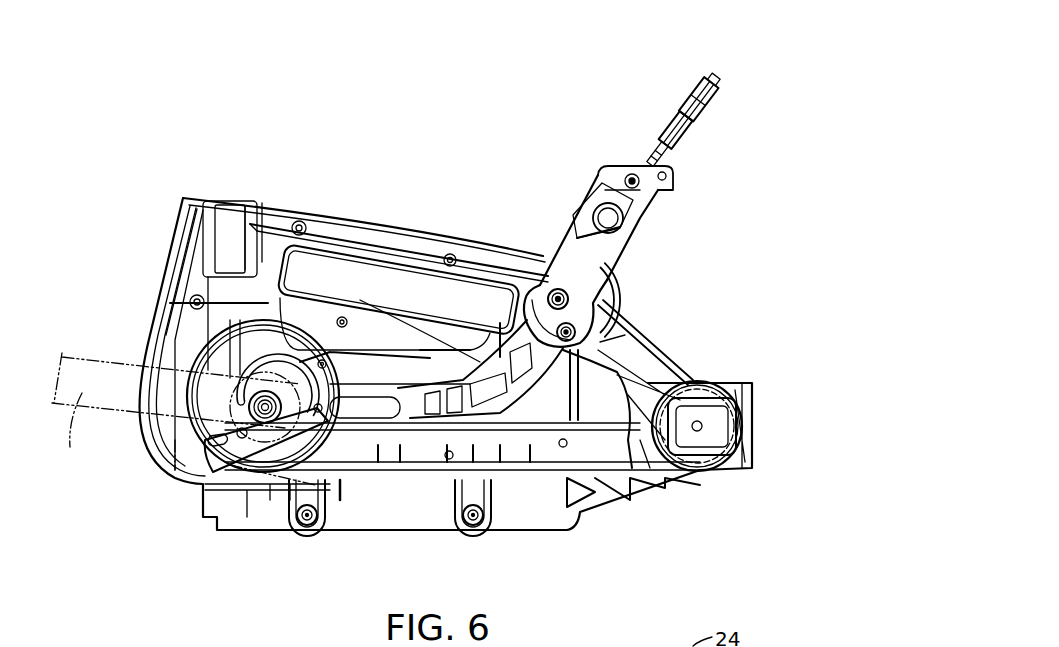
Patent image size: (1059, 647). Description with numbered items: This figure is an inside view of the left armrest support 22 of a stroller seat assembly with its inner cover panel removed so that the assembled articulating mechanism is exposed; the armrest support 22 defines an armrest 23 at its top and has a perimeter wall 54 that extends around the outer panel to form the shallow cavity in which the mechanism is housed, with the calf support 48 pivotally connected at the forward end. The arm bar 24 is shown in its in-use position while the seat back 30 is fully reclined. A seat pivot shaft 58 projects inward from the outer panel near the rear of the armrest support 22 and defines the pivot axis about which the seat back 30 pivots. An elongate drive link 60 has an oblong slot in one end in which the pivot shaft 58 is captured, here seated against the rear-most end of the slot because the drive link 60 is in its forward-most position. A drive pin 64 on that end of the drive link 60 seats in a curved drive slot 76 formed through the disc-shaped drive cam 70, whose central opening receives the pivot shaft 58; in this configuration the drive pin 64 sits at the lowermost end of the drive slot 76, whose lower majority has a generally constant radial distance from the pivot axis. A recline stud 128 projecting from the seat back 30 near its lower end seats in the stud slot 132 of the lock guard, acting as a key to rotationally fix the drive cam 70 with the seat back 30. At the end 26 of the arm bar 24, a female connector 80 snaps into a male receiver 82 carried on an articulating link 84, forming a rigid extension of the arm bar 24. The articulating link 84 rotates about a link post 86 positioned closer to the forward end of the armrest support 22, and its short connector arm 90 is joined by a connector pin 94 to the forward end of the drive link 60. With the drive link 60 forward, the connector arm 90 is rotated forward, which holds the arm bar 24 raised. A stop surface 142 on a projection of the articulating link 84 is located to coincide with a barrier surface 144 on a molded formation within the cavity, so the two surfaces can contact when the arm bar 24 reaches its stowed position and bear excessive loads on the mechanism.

The armrest support 22 is at (158, 237).
The armrest 23 is at (355, 220).
The arm bar 24 is at (715, 72).
The end 26 is at (655, 152).
The seat back 30 is at (68, 435).
The calf support 48 is at (752, 412).
The perimeter wall 54 is at (150, 340).
The seat pivot shaft 58 is at (143, 393).
The drive link 60 is at (410, 420).
The drive pin 64 is at (343, 435).
The drive cam 70 is at (255, 445).
The drive slot 76 is at (288, 362).
The female connector 80 is at (628, 228).
The male receiver 82 is at (576, 232).
The articulating link 84 is at (550, 247).
The link post 86 is at (604, 266).
The connector arm 90 is at (483, 292).
The connector pin 94 is at (617, 320).
The recline stud 128 is at (212, 448).
The stud slot 132 is at (200, 447).
The stop surface 142 is at (593, 317).
The barrier surface 144 is at (590, 336).